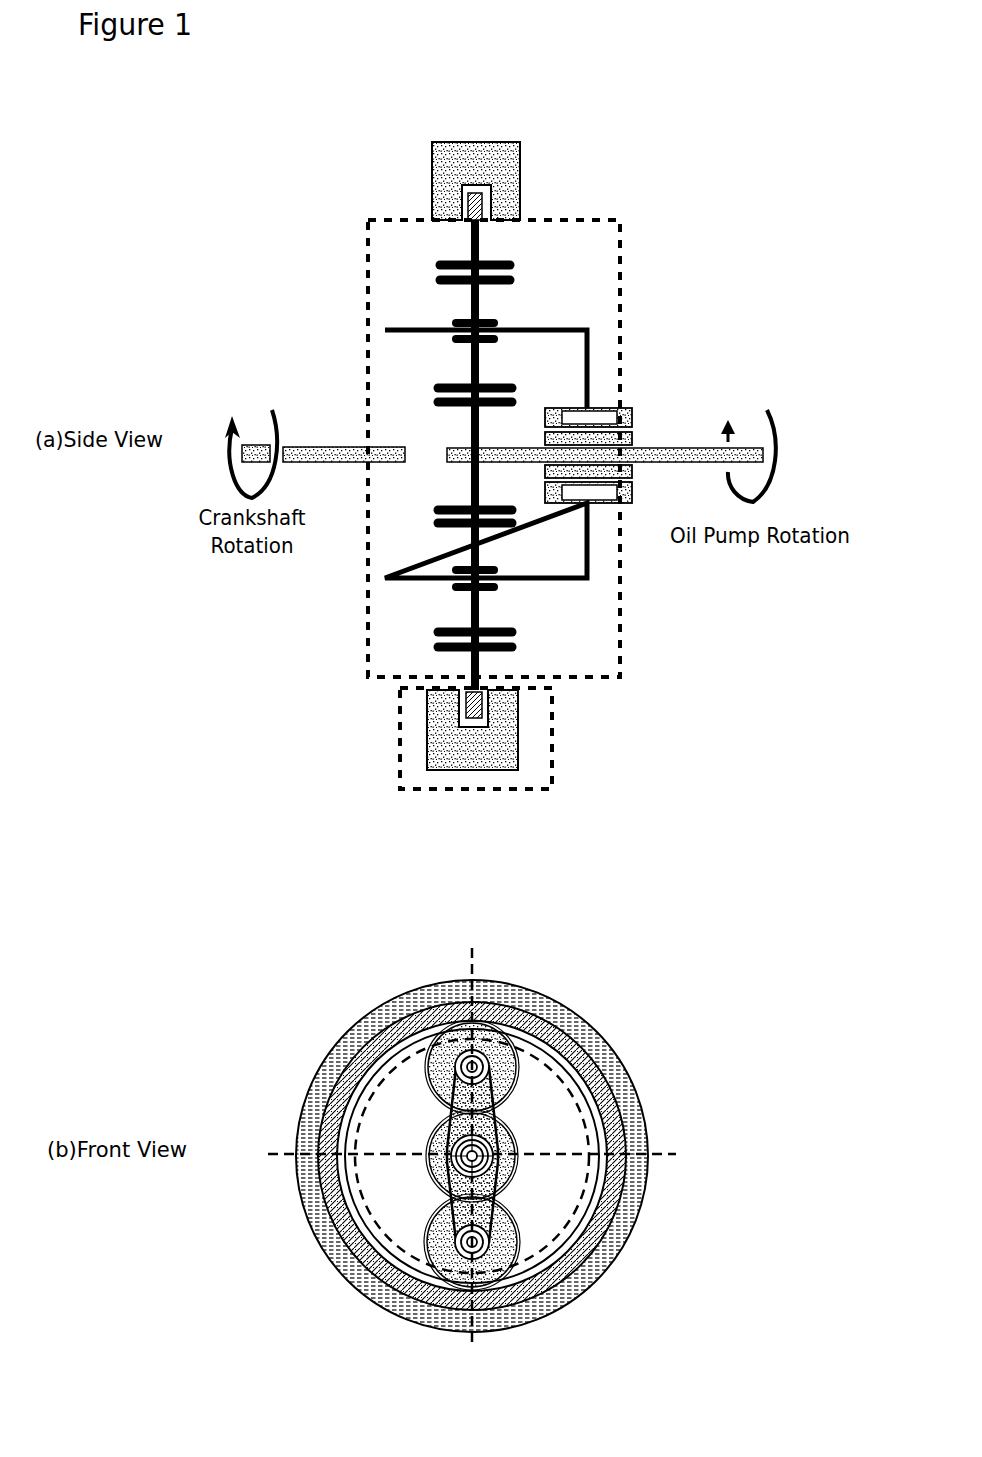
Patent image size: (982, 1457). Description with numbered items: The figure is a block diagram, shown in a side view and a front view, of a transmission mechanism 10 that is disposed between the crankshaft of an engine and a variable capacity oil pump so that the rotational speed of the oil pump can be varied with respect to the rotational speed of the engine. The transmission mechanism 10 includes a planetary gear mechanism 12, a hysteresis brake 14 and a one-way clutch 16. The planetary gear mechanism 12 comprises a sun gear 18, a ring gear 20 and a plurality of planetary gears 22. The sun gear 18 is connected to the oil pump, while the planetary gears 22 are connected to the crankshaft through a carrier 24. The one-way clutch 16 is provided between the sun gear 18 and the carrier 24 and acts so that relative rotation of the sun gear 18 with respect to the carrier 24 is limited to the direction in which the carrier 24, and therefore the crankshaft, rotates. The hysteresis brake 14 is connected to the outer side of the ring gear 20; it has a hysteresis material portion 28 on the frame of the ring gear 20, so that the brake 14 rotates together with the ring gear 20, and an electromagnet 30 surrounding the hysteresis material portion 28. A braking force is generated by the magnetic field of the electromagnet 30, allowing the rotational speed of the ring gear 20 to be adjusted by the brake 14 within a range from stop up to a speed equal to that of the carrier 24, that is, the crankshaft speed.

The transmission mechanism 10 is at (303, 287).
The planetary gear mechanism 12 is at (620, 220).
The hysteresis brake 14 is at (550, 755).
The one-way clutch 16 is at (628, 408).
The sun gear 18 is at (478, 497).
The ring gear 20 is at (478, 248).
The planetary gears 22 is at (478, 305).
The carrier 24 is at (590, 343).
The hysteresis material portion 28 is at (470, 198).
The electromagnet 30 is at (478, 138).